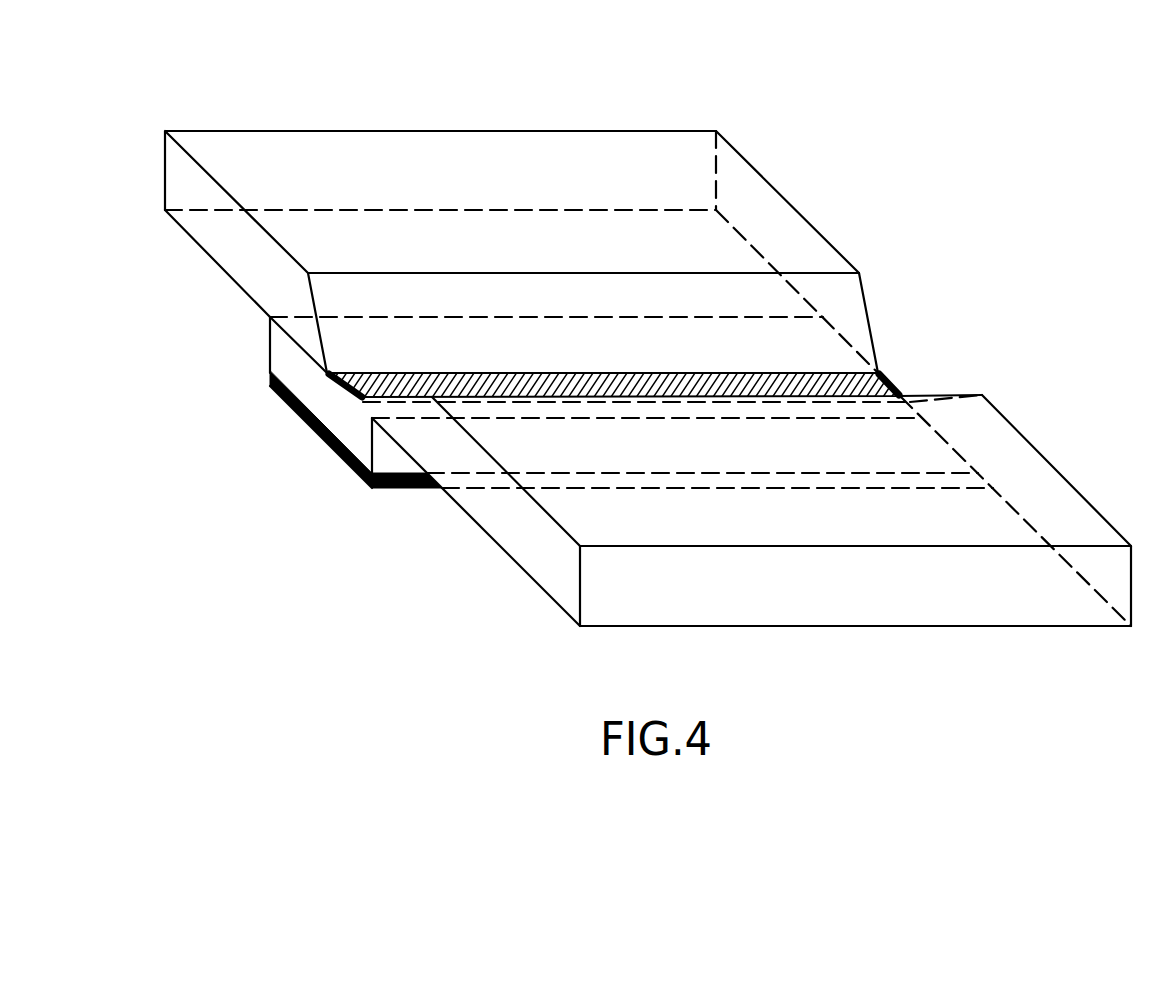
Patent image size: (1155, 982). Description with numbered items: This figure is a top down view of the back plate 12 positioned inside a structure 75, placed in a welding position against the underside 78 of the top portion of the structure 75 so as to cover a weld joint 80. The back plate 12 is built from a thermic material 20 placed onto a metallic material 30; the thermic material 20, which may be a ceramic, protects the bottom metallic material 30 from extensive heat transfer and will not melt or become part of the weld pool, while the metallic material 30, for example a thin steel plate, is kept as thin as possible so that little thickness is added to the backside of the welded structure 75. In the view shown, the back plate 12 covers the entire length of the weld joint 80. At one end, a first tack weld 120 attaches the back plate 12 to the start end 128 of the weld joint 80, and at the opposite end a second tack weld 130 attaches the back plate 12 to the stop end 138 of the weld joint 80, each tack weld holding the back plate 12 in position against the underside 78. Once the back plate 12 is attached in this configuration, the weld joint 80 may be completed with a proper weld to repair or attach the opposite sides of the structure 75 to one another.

The back plate 12 is at (290, 449).
The thermic material 20 is at (270, 353).
The metallic material 30 is at (320, 437).
The structure 75 is at (407, 157).
The underside 78 is at (513, 560).
The weld joint 80 is at (820, 247).
The first tack weld 120 is at (330, 384).
The start end 128 is at (363, 398).
The second tack weld 130 is at (900, 390).
The stop end 138 is at (878, 372).